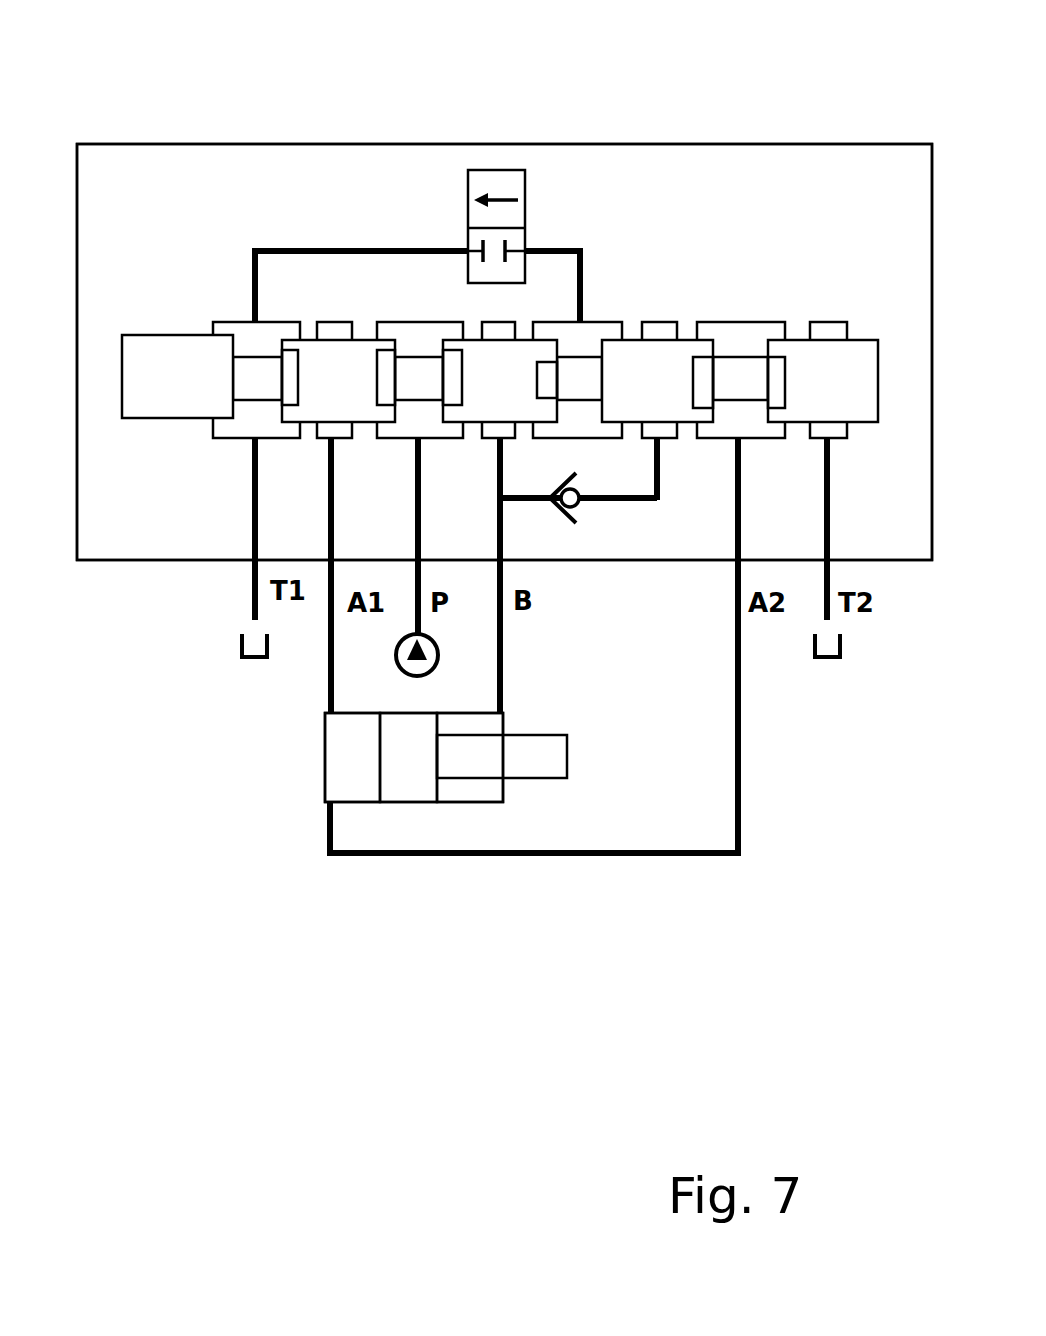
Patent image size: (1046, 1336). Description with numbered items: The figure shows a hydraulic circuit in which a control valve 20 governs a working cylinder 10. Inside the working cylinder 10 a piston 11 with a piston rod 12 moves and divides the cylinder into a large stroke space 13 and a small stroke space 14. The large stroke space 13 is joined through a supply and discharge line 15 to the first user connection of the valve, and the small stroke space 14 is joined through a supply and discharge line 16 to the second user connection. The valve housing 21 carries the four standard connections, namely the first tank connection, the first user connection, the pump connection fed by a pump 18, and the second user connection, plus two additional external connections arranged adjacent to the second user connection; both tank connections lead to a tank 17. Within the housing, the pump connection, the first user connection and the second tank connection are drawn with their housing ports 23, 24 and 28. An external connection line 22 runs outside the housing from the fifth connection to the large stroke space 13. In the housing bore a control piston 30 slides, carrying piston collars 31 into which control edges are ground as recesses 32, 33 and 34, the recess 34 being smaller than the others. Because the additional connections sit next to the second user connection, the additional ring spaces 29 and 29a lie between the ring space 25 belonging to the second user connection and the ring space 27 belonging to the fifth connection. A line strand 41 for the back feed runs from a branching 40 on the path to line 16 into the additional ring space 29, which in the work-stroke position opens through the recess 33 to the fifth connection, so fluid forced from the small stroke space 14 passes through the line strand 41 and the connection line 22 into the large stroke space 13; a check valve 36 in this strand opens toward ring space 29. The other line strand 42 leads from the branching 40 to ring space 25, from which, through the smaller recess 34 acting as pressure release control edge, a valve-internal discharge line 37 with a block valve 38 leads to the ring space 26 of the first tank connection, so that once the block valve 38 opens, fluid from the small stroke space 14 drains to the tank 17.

The working cylinder 10 is at (500, 803).
The piston 11 is at (405, 782).
The piston rod 12 is at (555, 765).
The large stroke space 13 is at (342, 765).
The small stroke space 14 is at (460, 792).
The supply and discharge line 15 is at (330, 668).
The supply and discharge line 16 is at (505, 652).
The tank 17 is at (240, 648).
The pump 18 is at (404, 664).
The control valve 20 is at (735, 130).
The valve housing 21 is at (768, 147).
The external connection line 22 is at (742, 772).
The pump port P 23 is at (430, 423).
The working port A1 24 is at (338, 425).
The ring space 25 is at (505, 428).
The ring space 26 is at (267, 423).
The ring space 27 is at (748, 430).
The tank port T2 28 is at (833, 432).
The additional ring space 29 is at (663, 428).
The additional ring space 29a is at (577, 425).
The control piston 30 is at (252, 388).
The piston collar 31 is at (347, 355).
The recess 32 is at (290, 367).
The recess 33 is at (700, 377).
The recess 34 is at (545, 377).
The check valve 36 is at (575, 525).
The valve-internal discharge line 37 is at (563, 248).
The block valve 38 is at (468, 170).
The branching 40 is at (498, 498).
The line strand 41 is at (657, 498).
The line strand 42 is at (498, 468).